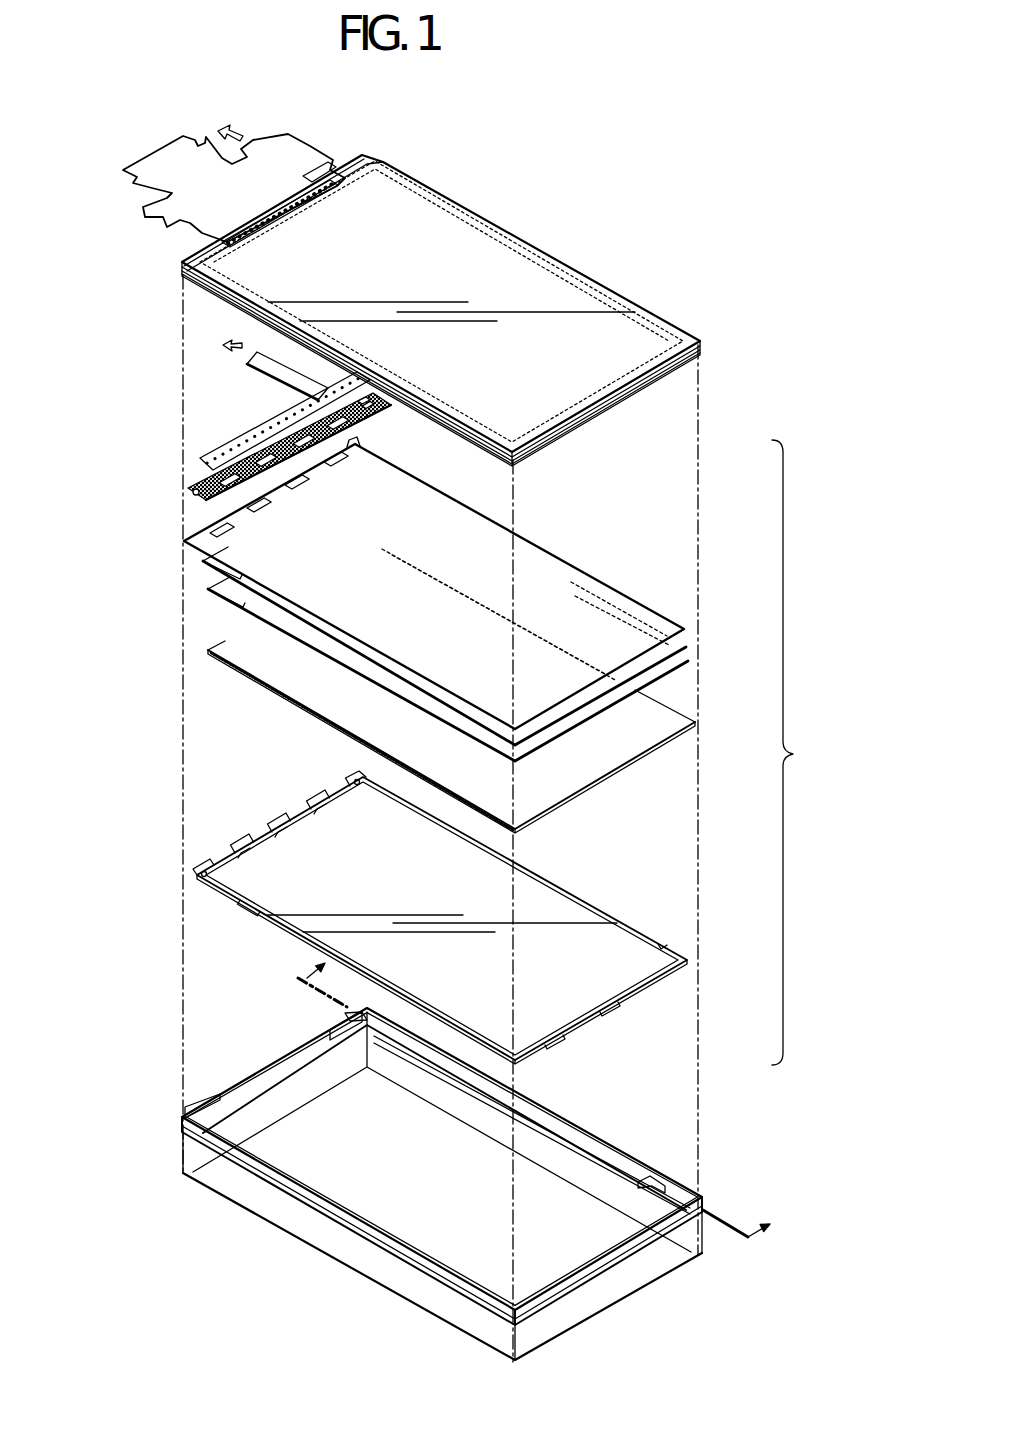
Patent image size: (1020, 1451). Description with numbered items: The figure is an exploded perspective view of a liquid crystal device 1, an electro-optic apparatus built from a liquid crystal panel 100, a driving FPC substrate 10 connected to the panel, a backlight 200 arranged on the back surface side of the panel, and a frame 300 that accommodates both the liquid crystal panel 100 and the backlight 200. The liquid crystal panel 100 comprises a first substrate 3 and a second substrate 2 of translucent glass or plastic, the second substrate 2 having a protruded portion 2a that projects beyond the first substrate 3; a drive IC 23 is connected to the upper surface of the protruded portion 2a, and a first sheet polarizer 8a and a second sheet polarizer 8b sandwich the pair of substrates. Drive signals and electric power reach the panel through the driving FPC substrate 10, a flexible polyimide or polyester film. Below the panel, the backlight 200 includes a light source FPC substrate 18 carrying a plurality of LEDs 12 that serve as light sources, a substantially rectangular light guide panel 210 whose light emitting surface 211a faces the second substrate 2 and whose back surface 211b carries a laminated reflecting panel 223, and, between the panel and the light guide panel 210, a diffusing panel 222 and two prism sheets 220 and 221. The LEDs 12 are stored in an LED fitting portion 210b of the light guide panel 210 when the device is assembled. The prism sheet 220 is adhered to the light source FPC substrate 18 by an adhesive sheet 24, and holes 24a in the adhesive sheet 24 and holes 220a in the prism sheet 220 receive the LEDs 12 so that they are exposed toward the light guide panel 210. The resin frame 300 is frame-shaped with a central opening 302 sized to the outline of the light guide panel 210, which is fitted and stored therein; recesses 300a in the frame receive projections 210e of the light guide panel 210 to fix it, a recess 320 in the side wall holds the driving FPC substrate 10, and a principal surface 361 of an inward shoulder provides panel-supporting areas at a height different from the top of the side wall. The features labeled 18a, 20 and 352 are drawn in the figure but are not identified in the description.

The liquid crystal device 1 is at (657, 165).
The driving FPC substrate 10 is at (150, 137).
The liquid crystal panel 100 is at (466, 282).
The second substrate 2 is at (683, 358).
The protruded portion 2a is at (372, 158).
The first substrate 3 is at (693, 350).
The first sheet polarizer 8a is at (678, 330).
The second sheet polarizer 8b is at (637, 357).
The drive IC 23 is at (315, 188).
The light source FPC substrate 18 is at (255, 424).
The light source wiring board 18a is at (283, 418).
The LEDs 12 is at (227, 445).
The adhesive sheet 24 is at (205, 485).
The holes 24a is at (362, 405).
The backlight 200 is at (468, 751).
The prism sheet 220 is at (434, 583).
The holes 220a is at (359, 444).
The prism sheet 221 is at (675, 637).
The diffusing panel 222 is at (680, 655).
The reflective sheet 20 is at (605, 780).
The light guide panel 210 is at (401, 907).
The LED fitting portion 210b is at (228, 867).
The projections 210e is at (653, 943).
The light emitting surface 211a is at (272, 860).
The back surface 211b is at (280, 927).
The frame 300 is at (383, 1181).
The recesses 300a is at (643, 1177).
The opening 302 is at (578, 1145).
The recess 320 is at (330, 1032).
The side bracket 352 is at (203, 1100).
The principal surface 361 is at (345, 1015).
The reflecting panel 223 is at (337, 1238).